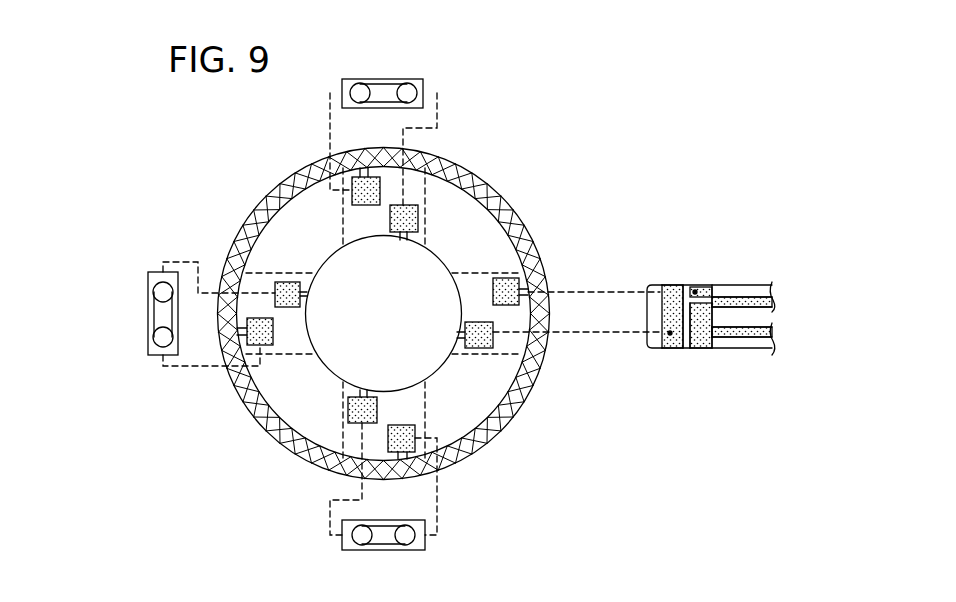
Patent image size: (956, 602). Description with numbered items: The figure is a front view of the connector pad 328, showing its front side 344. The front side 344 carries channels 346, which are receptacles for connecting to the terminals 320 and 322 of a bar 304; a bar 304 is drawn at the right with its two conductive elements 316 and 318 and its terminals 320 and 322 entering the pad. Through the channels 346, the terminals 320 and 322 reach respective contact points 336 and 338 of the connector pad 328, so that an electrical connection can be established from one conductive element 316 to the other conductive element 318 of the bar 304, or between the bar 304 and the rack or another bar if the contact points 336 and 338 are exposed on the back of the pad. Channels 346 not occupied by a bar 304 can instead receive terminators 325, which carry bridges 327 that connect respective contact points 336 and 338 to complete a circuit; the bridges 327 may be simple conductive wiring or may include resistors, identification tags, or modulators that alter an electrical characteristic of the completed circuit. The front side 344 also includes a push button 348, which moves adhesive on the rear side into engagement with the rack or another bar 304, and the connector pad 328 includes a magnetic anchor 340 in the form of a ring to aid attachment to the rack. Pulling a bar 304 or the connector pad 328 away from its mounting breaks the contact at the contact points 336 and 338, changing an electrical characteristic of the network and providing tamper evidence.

The bar 304 is at (722, 285).
The conductive element 316 is at (755, 300).
The conductive element 318 is at (747, 333).
The terminal 320 is at (667, 348).
The terminal 322 is at (703, 348).
The terminator 325 is at (392, 108).
The bridge 327 is at (382, 88).
The connector pad 328 is at (492, 115).
The contact point 336 is at (352, 204).
The contact point 338 is at (274, 283).
The magnetic anchor 340 is at (288, 177).
The front side 344 is at (520, 163).
The channel 346 is at (530, 350).
The push button 348 is at (422, 357).